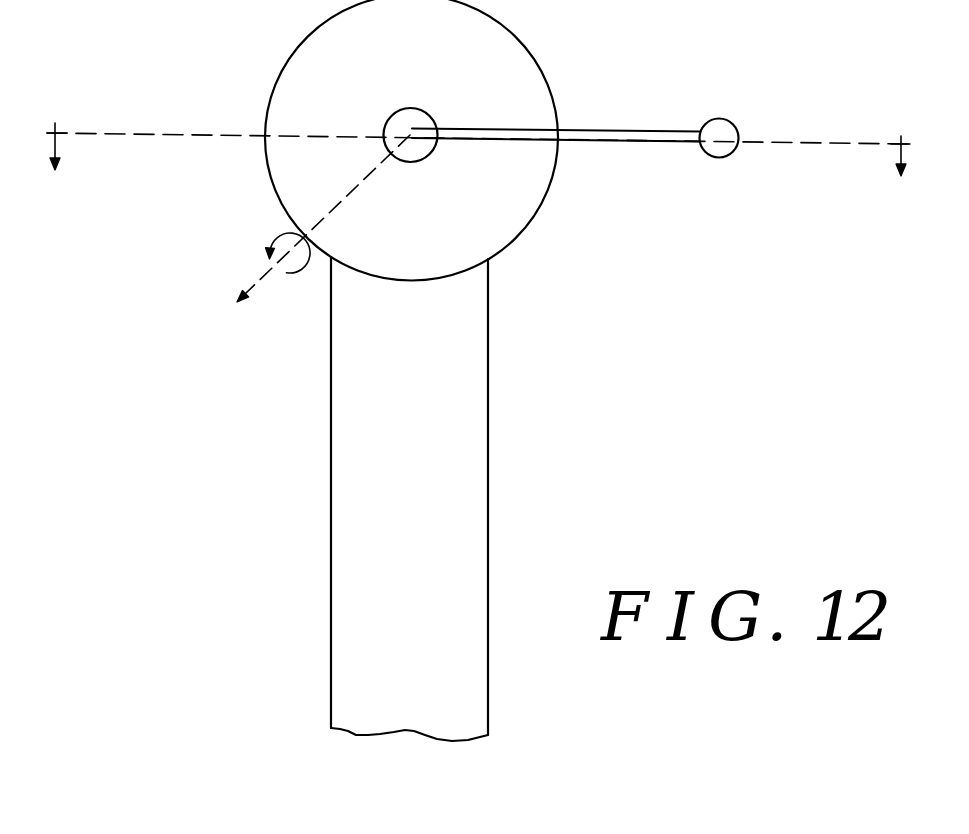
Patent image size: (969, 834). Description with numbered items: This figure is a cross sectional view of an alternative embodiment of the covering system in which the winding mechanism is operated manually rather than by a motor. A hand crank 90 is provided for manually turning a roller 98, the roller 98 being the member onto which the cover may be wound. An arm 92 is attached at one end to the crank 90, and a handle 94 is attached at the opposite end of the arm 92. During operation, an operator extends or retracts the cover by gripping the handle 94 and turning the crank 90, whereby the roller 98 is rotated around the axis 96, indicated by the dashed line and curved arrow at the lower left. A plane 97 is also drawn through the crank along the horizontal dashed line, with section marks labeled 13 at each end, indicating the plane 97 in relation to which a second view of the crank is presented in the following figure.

The hand crank 90 is at (520, 41).
The arm 92 is at (589, 130).
The handle 94 is at (723, 118).
The axis 96 is at (265, 271).
The plane 97 is at (793, 145).
The roller 98 is at (422, 109).
The section line 13- 13 is at (472, 164).